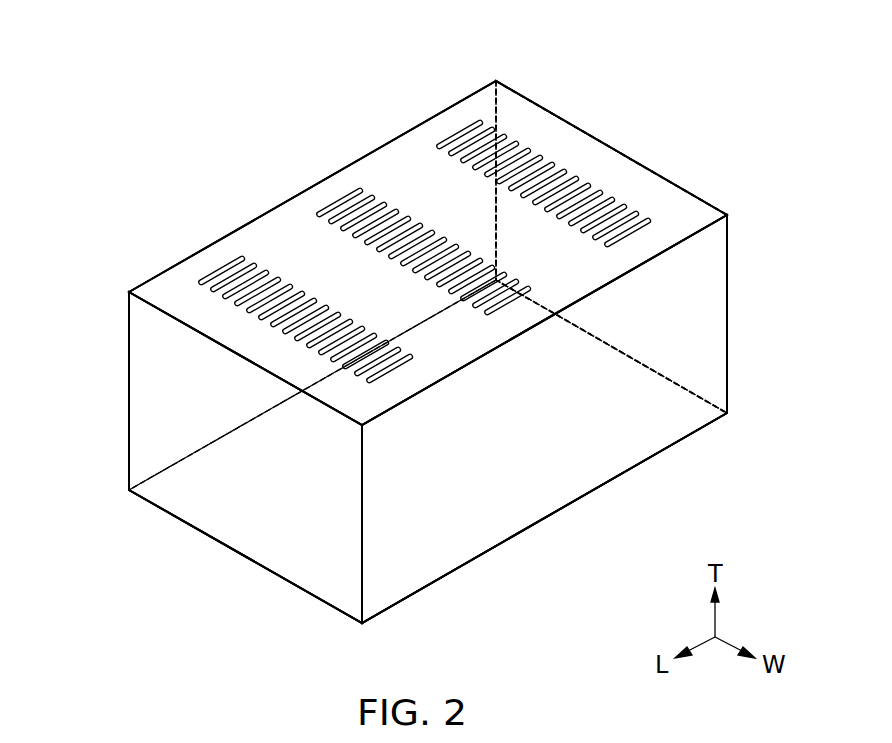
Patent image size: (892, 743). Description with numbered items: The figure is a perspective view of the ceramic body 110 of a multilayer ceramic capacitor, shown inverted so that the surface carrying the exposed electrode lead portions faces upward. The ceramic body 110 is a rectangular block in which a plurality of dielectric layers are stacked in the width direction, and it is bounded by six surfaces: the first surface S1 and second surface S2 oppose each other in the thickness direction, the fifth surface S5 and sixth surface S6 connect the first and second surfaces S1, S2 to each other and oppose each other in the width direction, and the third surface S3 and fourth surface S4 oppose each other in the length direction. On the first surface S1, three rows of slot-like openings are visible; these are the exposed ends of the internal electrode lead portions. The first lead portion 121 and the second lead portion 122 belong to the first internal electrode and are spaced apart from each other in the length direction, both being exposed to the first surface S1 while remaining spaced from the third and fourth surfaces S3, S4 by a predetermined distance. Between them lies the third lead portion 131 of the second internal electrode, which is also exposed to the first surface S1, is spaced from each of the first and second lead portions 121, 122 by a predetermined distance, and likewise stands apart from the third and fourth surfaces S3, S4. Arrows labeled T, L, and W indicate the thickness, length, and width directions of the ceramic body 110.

The ceramic body 110 is at (547, 128).
The first lead portion 121 is at (222, 272).
The second lead portion 122 is at (472, 123).
The third lead portion 131 is at (342, 200).
The first surface S1 is at (418, 174).
The second surface S2 is at (406, 584).
The third surface S3 is at (160, 426).
The fourth surface S4 is at (682, 225).
The fifth surface S5 is at (288, 243).
The sixth surface S6 is at (638, 437).